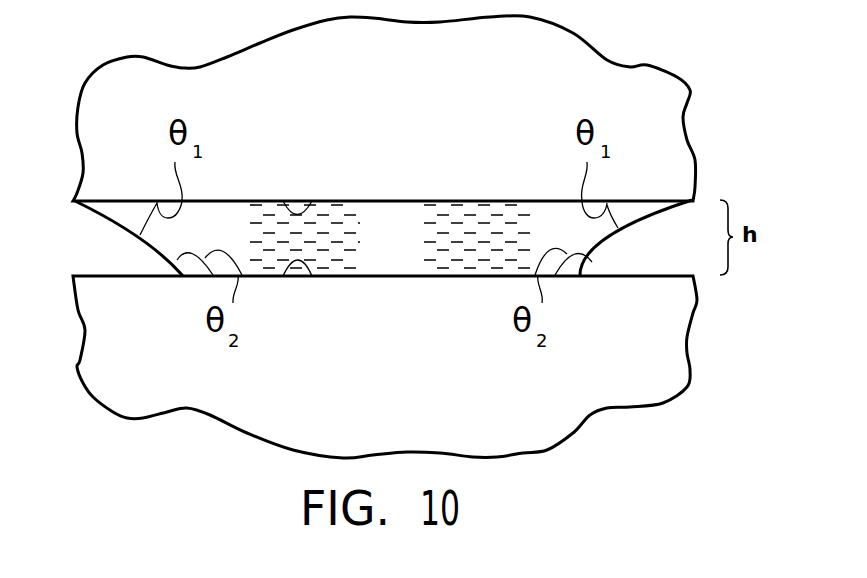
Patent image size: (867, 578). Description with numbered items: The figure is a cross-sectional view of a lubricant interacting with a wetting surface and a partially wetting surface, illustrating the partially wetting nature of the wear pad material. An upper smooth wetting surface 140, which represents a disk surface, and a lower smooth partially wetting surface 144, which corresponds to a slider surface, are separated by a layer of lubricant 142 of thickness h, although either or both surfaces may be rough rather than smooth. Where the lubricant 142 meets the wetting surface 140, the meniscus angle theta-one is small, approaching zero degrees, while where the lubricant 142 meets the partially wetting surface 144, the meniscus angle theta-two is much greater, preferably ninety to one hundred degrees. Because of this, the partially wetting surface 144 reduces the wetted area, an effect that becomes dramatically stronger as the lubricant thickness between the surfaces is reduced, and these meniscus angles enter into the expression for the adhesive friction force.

The wetting surface 140 is at (310, 200).
The lubricant 142 is at (411, 250).
The partially wetting surface 144 is at (310, 276).